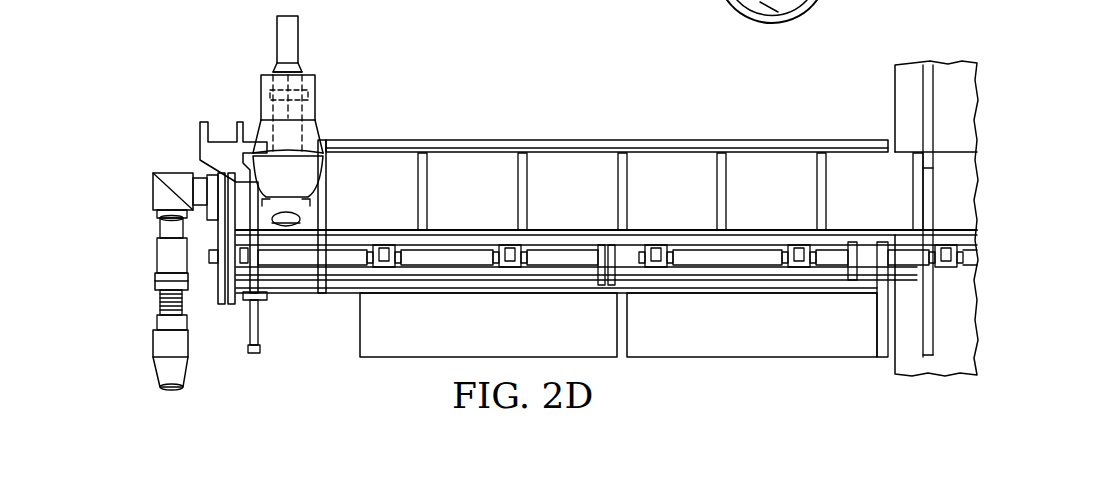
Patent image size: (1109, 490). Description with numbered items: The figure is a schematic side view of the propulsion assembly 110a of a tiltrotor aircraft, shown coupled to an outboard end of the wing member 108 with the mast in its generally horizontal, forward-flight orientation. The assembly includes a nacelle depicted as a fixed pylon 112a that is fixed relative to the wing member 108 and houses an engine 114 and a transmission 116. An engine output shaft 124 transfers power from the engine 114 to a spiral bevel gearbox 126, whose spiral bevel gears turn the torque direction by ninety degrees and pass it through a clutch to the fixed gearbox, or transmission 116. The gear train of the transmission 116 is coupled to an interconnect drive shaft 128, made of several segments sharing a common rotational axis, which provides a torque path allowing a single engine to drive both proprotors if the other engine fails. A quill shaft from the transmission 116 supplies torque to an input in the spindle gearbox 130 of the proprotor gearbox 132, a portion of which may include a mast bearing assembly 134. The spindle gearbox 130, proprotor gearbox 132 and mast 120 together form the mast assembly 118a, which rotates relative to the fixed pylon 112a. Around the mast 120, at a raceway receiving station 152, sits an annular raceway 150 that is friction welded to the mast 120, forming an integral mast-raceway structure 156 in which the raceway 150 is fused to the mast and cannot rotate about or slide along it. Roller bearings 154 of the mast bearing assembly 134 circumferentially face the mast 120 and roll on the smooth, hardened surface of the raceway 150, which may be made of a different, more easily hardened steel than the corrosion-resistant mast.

The wing member 108 is at (578, 165).
The propulsion assembly 110a is at (167, 171).
The fixed pylon 112a is at (155, 282).
The engine 114 is at (152, 343).
The transmission 116 is at (225, 306).
The mast assembly 118a is at (356, 178).
The proprotor gearbox 132 is at (307, 177).
The mast 120 is at (291, 133).
The engine output shaft 124 is at (160, 230).
The spiral bevel gearbox 126 is at (138, 194).
The interconnect drive shaft 128 is at (343, 258).
The spindle gearbox 130 is at (308, 211).
The mast bearing assembly 134 is at (257, 96).
The annular raceway 150 is at (290, 75).
The raceway receiving station 152 is at (270, 70).
The roller bearings 154 is at (312, 100).
The integral mast-raceway structure 156 is at (291, 93).